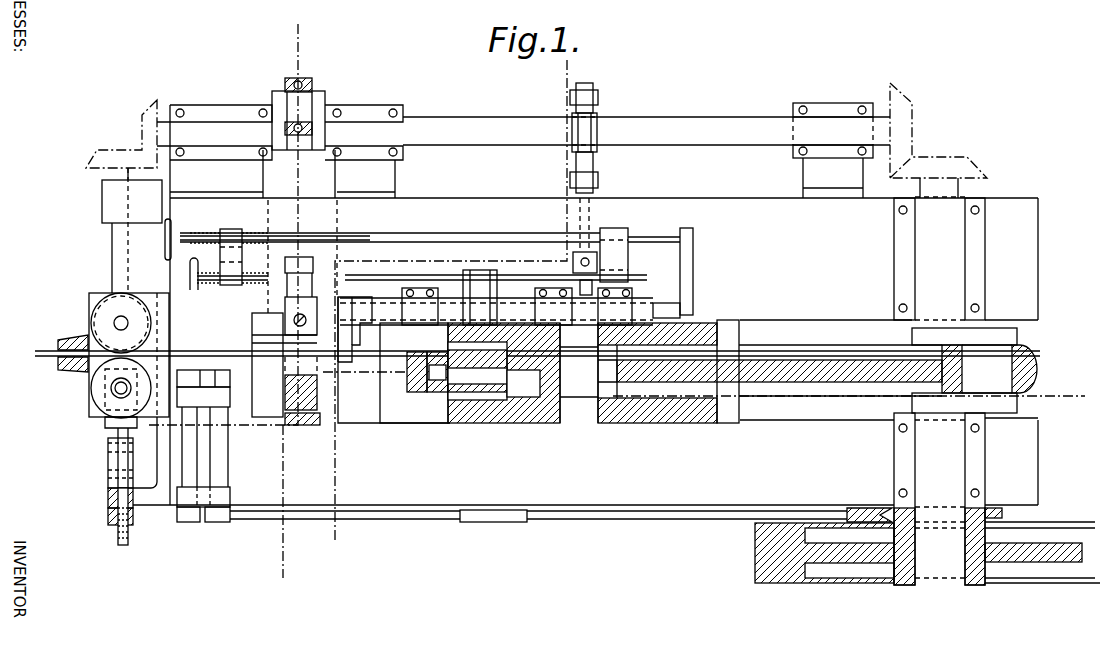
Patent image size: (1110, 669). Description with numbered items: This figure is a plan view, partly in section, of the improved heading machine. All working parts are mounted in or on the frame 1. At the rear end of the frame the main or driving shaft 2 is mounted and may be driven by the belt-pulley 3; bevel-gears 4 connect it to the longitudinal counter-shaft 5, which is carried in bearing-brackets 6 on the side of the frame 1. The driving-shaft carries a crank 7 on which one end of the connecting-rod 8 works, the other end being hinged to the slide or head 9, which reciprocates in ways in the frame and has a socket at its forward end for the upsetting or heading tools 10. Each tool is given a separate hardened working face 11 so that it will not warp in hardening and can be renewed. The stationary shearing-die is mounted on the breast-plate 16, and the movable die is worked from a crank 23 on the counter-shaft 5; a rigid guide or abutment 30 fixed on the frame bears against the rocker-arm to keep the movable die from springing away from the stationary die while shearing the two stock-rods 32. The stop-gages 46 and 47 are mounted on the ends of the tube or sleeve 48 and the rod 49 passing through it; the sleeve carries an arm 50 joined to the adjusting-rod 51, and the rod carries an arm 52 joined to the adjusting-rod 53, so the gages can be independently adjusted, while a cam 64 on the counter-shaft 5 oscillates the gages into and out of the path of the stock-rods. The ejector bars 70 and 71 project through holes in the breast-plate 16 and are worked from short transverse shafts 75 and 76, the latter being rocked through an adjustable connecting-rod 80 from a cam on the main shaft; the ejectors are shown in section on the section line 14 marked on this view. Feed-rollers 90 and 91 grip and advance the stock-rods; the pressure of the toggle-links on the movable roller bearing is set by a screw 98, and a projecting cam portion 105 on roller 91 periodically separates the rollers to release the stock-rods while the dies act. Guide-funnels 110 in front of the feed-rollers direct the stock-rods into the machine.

The frame 1 is at (585, 305).
The main or driving shaft 2 is at (939, 391).
The belt-pulley 3 is at (30, 356).
The bevel-gears 4 is at (957, 152).
The counter-shaft 5 is at (711, 128).
The bearing-brackets 6 is at (828, 110).
The crank 7 is at (974, 371).
The connecting-rod 8 is at (815, 376).
The slide or head 9 is at (645, 400).
The upsetting or heading tools 10 is at (447, 382).
The hardened working face 11 is at (405, 425).
The slide 14 is at (214, 397).
The breast-plate 16 is at (267, 365).
The crank 23 is at (325, 103).
The guide or abutment 30 is at (330, 262).
The stock-rods 32 is at (52, 350).
The stop-gage 46 is at (358, 350).
The stop-gage 47 is at (338, 341).
The tube or sleeve 48 is at (388, 308).
The rod 49 is at (317, 312).
The arm 50 is at (480, 297).
The adjusting-rod 51 is at (447, 285).
The arm 52 is at (693, 268).
The adjusting-rod 53 is at (430, 247).
The cam 64 is at (598, 160).
The ejector-bar 70 is at (238, 366).
The ejector-bar 71 is at (208, 366).
The transverse shaft 75 is at (222, 457).
The transverse shaft 76 is at (192, 458).
The adjustable connecting-rod 80 is at (614, 520).
The feed-roller 90 is at (129, 355).
The feed-roller 91 is at (98, 385).
The screw 98 is at (128, 532).
The cam portion 105 is at (150, 376).
The guide-funnels 110 is at (82, 341).